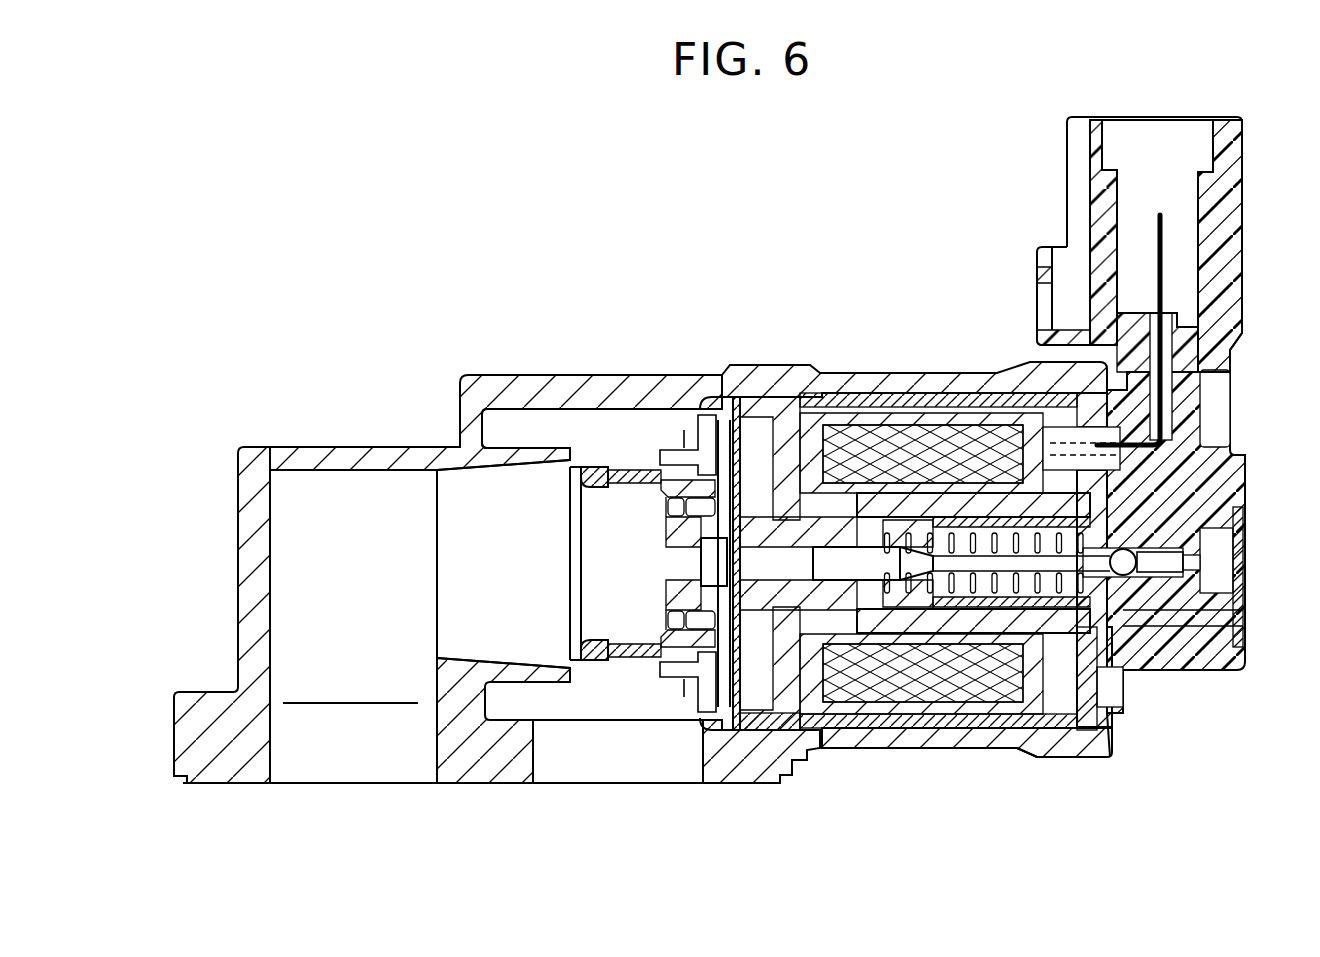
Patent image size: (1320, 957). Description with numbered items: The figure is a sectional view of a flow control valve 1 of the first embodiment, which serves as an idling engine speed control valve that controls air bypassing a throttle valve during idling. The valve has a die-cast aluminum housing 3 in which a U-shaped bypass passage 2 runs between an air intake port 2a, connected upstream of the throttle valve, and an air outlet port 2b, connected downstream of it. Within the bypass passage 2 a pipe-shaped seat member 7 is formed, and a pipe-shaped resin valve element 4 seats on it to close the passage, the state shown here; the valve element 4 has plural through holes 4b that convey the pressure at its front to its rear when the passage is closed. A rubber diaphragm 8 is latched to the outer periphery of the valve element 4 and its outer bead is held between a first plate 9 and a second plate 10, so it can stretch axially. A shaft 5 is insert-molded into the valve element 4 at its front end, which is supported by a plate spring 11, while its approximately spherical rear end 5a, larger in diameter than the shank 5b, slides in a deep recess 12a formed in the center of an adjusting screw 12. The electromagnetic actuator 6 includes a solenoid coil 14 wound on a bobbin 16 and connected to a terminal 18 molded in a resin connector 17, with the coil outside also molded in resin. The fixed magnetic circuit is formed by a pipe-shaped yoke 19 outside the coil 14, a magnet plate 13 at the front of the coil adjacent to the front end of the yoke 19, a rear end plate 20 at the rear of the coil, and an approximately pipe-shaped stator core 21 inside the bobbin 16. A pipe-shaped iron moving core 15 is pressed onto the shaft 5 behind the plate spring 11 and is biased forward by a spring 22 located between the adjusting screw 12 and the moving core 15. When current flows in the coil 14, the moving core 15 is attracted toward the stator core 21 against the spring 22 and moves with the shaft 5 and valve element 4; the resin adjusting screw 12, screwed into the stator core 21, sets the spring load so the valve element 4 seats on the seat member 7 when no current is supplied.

The flow control valve 1 is at (747, 443).
The bypass passage 2 is at (497, 615).
The air intake port 2a is at (353, 658).
The air outlet port 2b is at (618, 783).
The housing 3 is at (496, 382).
The valve element 4 is at (576, 481).
The through holes 4b is at (620, 477).
The shaft 5 is at (905, 443).
The rear end 5a is at (1209, 546).
The shank 5b is at (1131, 678).
The electromagnetic actuator 6 is at (917, 525).
The seat member 7 is at (561, 371).
The diaphragm 8 is at (688, 399).
The first plate 9 is at (688, 748).
The second plate 10 is at (721, 620).
The plate spring 11 is at (753, 512).
The adjusting screw 12 is at (1051, 548).
The deep recess 12a is at (1228, 585).
The magnet plate 13 is at (770, 778).
The solenoid coil 14 is at (923, 634).
The moving core 15 is at (798, 680).
The bobbin 16 is at (938, 779).
The connector 17 is at (1139, 240).
The terminal 18 is at (1128, 243).
The yoke 19 is at (938, 618).
The rear end plate 20 is at (1069, 783).
The stator core 21 is at (1073, 773).
The spring 22 is at (921, 628).